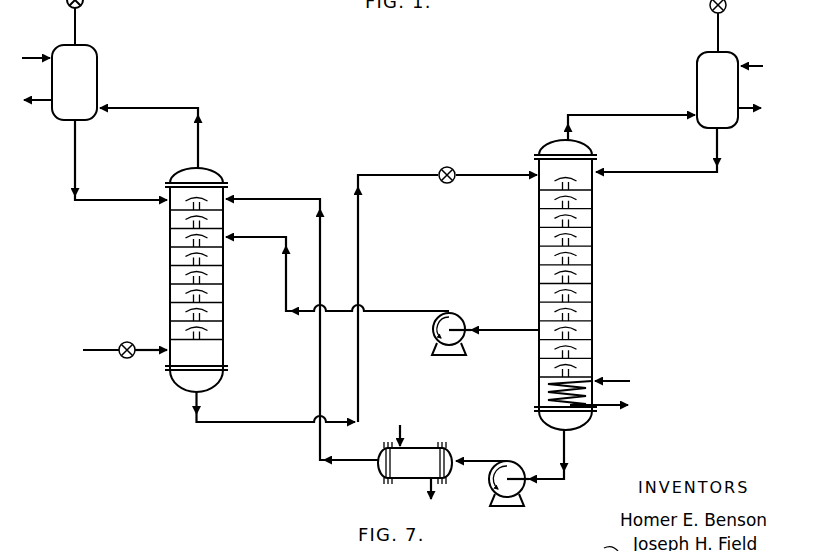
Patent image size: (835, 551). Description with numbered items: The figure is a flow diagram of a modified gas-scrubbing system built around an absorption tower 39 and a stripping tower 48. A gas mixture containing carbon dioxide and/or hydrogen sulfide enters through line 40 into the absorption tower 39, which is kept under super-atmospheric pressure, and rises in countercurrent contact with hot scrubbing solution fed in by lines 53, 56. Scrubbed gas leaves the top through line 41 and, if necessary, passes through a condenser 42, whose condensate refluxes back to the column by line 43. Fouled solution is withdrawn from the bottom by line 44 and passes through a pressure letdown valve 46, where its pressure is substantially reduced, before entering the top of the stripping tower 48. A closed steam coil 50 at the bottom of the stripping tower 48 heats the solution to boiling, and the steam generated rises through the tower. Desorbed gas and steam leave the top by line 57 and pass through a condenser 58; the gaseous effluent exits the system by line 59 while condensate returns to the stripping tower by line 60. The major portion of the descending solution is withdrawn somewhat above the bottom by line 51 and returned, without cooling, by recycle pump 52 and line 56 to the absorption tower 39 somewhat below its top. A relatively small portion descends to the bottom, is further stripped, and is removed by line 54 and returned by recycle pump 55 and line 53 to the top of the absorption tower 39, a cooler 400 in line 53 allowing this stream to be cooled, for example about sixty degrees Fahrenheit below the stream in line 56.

The absorption tower 39 is at (166, 253).
The line 40 is at (110, 347).
The line 41 is at (199, 150).
The condenser 42 is at (98, 51).
The line 43 is at (72, 166).
The line 44 is at (270, 424).
The pressure letdown valve 46 is at (454, 168).
The stripping tower 48 is at (594, 215).
The steam coil 50 is at (610, 378).
The line 51 is at (517, 332).
The recycle pump 52 is at (456, 315).
The line 53 is at (268, 198).
The line 54 is at (550, 483).
The recycle pump 55 is at (509, 462).
The line 56 is at (284, 276).
The line 57 is at (610, 113).
The condenser 58 is at (697, 78).
The line 59 is at (721, 35).
The line 60 is at (673, 170).
The cooler 400 is at (428, 446).